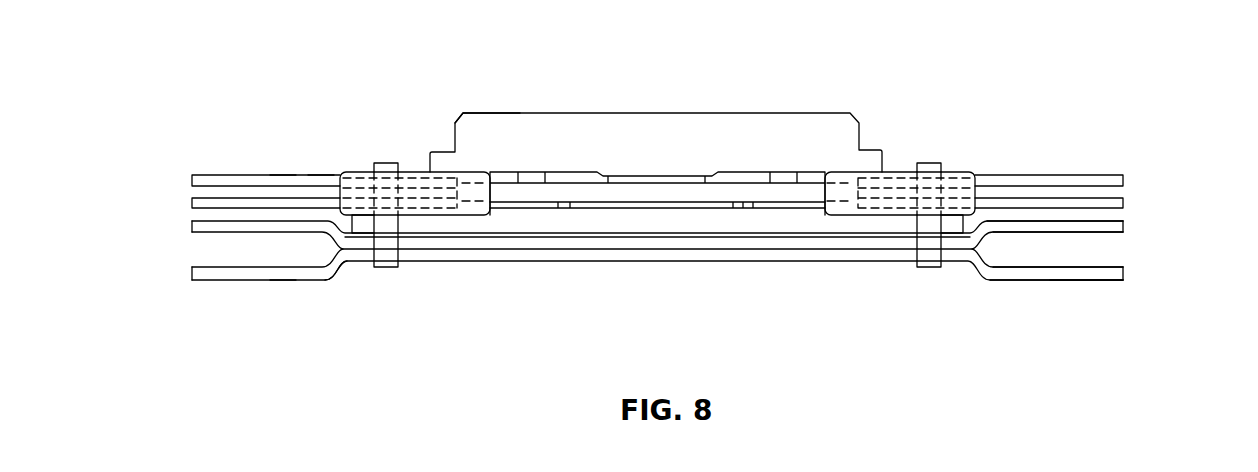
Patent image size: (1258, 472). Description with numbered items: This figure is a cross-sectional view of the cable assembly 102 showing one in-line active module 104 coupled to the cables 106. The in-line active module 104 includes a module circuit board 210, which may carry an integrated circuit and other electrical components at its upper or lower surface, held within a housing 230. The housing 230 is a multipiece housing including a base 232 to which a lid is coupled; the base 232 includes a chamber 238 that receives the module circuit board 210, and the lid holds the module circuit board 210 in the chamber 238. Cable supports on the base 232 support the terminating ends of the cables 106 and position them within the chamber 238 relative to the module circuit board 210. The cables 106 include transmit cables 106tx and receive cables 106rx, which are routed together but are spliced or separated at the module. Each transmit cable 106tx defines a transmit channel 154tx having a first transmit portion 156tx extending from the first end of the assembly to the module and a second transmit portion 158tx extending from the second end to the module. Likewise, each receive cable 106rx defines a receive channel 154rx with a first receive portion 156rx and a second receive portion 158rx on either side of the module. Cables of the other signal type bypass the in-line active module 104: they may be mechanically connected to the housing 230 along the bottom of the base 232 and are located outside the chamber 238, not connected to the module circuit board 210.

The cable assembly 102 is at (1020, 78).
The in-line active module 104 is at (840, 92).
The cables 106 is at (1078, 282).
The transmit cables 106tx is at (152, 222).
The receive cables 106rx is at (215, 227).
The transmit channel 154tx is at (281, 166).
The first transmit portion 156tx is at (321, 166).
The receive channel 154rx is at (282, 291).
The first receive portion 156rx is at (341, 287).
The second transmit portion 158tx is at (1041, 166).
The second receive portion 158rx is at (1100, 227).
The module circuit board 210 is at (587, 193).
The housing 230 is at (480, 103).
The base 232 is at (528, 218).
The chamber 238 is at (734, 210).